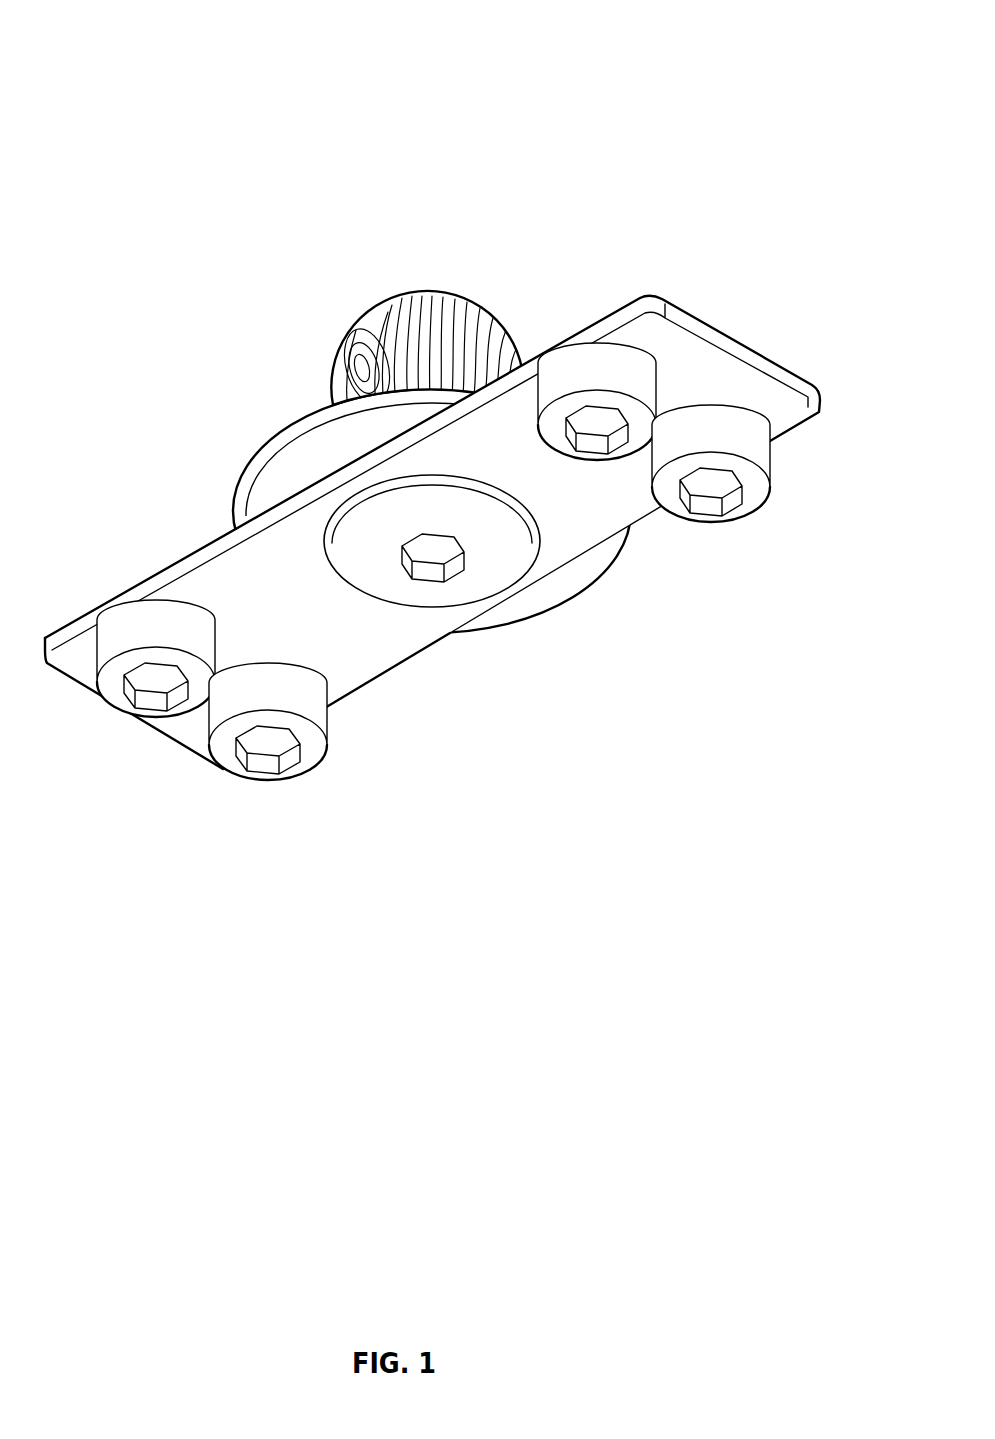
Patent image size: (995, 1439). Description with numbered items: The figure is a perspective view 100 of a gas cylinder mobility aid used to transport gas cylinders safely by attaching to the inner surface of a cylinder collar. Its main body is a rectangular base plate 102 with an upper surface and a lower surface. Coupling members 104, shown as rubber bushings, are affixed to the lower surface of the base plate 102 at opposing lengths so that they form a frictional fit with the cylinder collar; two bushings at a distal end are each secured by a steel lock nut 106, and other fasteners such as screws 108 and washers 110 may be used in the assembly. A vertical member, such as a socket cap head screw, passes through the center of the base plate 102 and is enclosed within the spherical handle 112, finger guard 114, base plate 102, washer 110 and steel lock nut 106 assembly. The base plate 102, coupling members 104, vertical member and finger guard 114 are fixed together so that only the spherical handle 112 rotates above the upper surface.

The perspective view 100 is at (784, 64).
The base plate 102 is at (429, 532).
The coupling members 104 is at (130, 620).
The steel lock nut 106 is at (157, 698).
The screws 108 is at (137, 577).
The washer 110 is at (363, 560).
The spherical handle 112 is at (360, 323).
The finger guard 114 is at (283, 477).